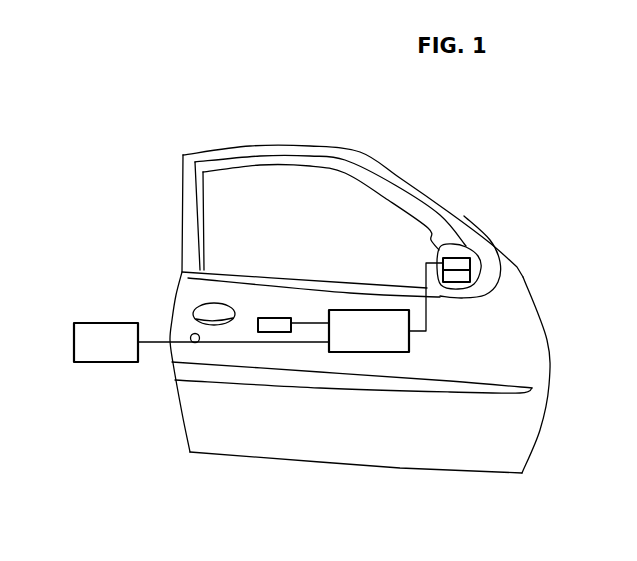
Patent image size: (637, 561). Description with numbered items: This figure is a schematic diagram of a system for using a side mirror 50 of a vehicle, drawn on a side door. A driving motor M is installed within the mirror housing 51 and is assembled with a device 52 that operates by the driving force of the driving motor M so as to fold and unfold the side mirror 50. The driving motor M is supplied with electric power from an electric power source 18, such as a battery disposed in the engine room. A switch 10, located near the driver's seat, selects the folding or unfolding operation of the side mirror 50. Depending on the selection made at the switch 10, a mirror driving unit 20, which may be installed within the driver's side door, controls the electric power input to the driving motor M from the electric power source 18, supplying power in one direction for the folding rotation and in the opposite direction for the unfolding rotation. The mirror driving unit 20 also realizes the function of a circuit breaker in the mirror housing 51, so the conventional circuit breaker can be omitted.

The switch 10 is at (275, 332).
The electric power source 18 is at (72, 342).
The mirror driving unit 20 is at (368, 352).
The side mirror 50 is at (483, 263).
The mirror housing 51 is at (452, 257).
The device 52 is at (510, 291).
The driving motor M is at (460, 258).